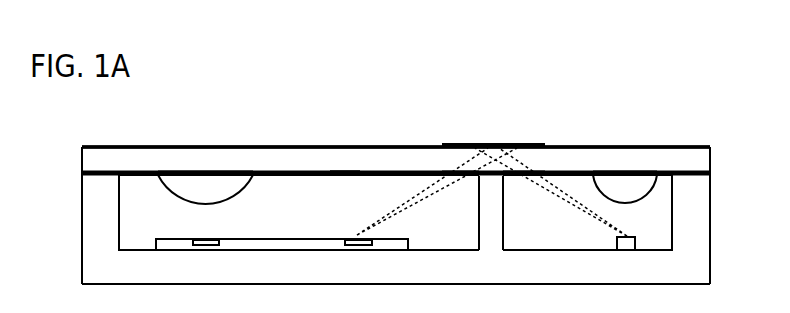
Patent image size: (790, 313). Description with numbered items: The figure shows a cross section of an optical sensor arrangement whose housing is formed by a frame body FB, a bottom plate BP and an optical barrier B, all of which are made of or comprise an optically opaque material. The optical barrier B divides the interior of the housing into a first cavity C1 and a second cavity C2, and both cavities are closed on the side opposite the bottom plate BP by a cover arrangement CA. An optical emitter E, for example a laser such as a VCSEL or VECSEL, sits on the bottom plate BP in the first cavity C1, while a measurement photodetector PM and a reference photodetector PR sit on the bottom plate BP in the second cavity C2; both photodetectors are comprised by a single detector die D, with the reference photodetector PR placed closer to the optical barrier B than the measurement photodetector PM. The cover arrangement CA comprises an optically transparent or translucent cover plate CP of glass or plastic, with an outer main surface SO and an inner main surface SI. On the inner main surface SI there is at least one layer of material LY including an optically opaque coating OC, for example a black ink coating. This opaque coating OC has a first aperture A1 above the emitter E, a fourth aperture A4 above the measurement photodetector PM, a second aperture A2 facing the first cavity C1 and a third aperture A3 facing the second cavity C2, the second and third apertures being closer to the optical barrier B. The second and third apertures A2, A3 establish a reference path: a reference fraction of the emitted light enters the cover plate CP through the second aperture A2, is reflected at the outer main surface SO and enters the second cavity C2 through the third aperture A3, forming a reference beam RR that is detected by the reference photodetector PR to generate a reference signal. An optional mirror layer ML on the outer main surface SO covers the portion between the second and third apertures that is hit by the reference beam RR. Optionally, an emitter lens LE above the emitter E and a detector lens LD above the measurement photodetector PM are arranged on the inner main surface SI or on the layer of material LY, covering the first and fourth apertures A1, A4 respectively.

The frame body FB is at (396, 215).
The bottom plate BP is at (396, 270).
The cover arrangement CA is at (396, 158).
The cover plate CP is at (396, 158).
The outer main surface SO is at (293, 147).
The inner main surface SI is at (300, 178).
The layer of material LY is at (340, 178).
The optically opaque coating OC is at (345, 196).
The mirror layer ML is at (459, 144).
The fourth aperture A4 is at (186, 174).
The third aperture A3 is at (458, 172).
The second aperture A2 is at (527, 172).
The first aperture A1 is at (636, 173).
The second cavity C2 is at (299, 212).
The first cavity C1 is at (587, 212).
The optical barrier B is at (491, 213).
The detector lens LD is at (205, 190).
The emitter lens LE is at (625, 190).
The detector die D is at (167, 246).
The measurement photodetector PM is at (202, 240).
The reference photodetector PR is at (351, 240).
The optical emitter E is at (617, 245).
The reference beam RR is at (420, 207).